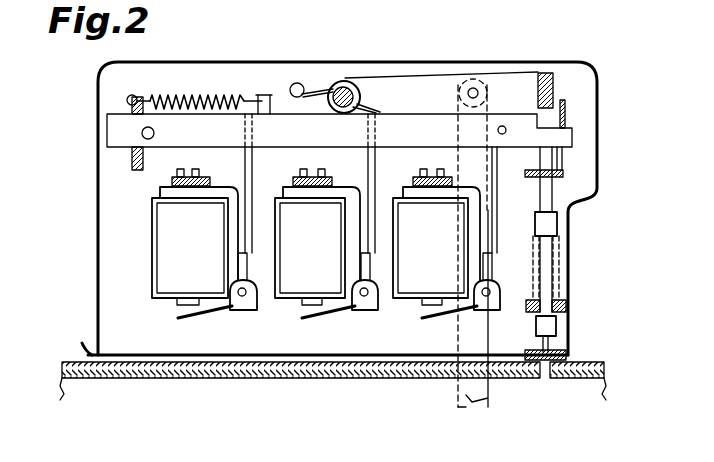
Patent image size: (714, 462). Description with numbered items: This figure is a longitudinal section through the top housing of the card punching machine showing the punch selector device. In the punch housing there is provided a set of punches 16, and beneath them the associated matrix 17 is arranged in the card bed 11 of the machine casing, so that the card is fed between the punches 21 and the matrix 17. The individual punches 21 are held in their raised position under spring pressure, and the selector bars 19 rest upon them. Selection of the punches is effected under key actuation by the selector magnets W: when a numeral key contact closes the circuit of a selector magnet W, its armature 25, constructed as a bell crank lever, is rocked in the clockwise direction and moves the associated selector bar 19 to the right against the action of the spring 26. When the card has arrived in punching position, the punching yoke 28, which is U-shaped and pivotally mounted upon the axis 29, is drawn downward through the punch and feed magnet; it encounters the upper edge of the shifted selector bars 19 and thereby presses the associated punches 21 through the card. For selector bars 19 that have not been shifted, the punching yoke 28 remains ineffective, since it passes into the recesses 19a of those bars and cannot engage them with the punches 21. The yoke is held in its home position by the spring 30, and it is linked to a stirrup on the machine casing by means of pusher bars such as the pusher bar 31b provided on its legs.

The card bed 11 is at (155, 372).
The matrix 17 is at (558, 380).
The selector bar 19 is at (513, 122).
The recess 19a is at (549, 118).
The spring 26 is at (190, 93).
The axis 29 is at (346, 86).
The spring 30 is at (376, 110).
The punching yoke 28 is at (447, 95).
The selector magnet W is at (440, 243).
The armature 25 is at (487, 305).
The pusher bar 31b is at (478, 393).
The set of punches 16 is at (568, 308).
The punch 21 is at (546, 328).